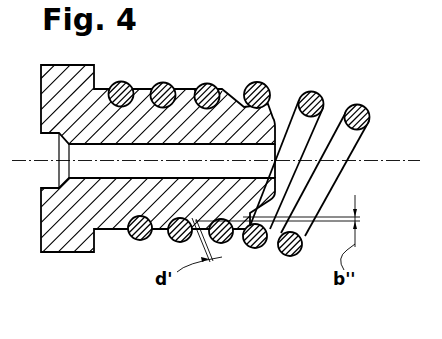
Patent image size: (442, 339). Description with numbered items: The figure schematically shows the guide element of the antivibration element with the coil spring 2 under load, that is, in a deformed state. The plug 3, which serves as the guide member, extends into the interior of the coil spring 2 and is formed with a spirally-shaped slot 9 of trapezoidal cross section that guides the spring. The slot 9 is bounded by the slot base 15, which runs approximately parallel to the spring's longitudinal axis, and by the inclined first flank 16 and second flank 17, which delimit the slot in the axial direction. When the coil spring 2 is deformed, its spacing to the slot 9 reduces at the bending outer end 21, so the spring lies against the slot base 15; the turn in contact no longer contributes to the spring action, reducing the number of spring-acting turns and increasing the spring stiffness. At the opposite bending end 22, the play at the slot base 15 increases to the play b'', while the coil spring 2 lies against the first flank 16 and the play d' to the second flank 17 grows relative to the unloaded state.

The plug 3 is at (57, 77).
The slot 9 is at (124, 84).
The coil spring 2 is at (164, 83).
The slot base 15 is at (216, 86).
The first flank 16 is at (149, 238).
The second flank 17 is at (246, 233).
The bending outer end 21 is at (319, 91).
The bending end 22 is at (296, 258).